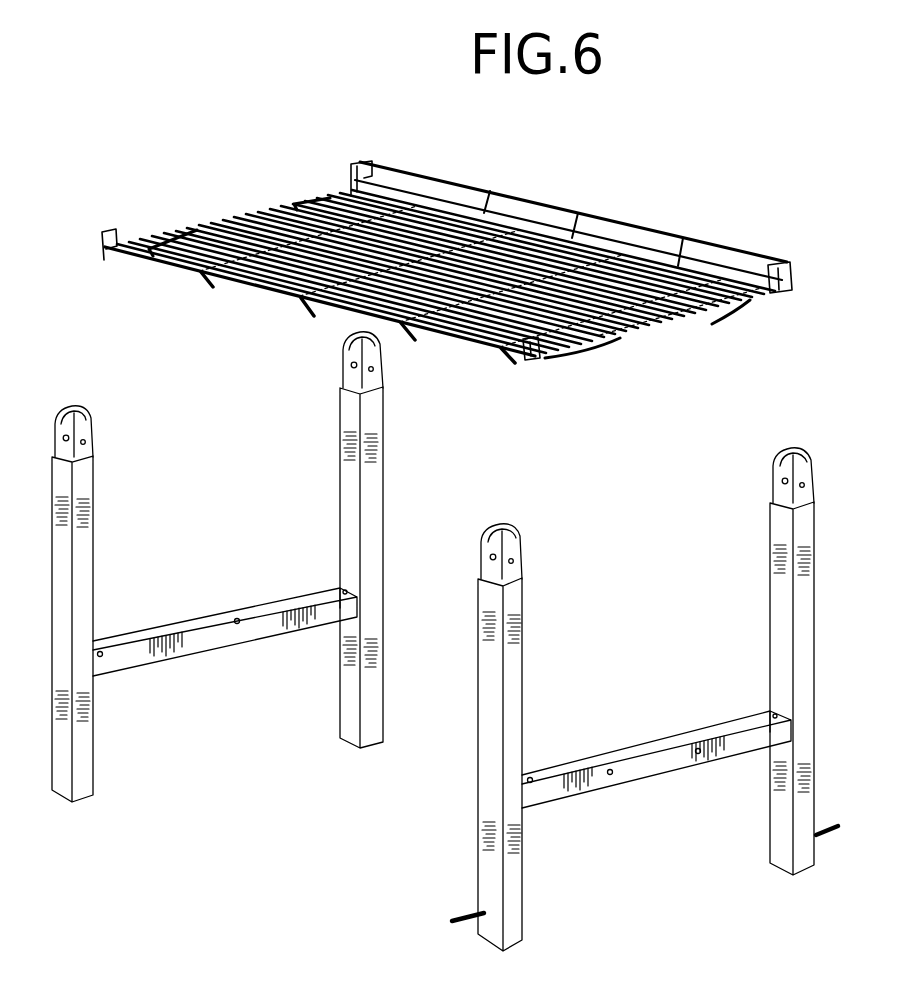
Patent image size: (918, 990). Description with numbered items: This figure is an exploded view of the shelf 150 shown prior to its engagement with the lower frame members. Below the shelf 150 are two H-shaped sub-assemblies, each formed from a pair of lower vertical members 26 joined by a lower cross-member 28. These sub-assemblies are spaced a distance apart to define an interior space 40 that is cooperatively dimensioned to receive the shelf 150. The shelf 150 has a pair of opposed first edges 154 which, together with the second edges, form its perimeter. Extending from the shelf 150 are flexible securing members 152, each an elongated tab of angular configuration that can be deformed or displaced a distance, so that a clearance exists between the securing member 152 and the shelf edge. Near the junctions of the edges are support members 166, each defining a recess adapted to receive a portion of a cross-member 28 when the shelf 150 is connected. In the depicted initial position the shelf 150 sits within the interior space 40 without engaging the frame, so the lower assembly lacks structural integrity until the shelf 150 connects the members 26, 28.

The shelf 150 is at (465, 274).
The securing member 152 is at (167, 240).
The first edges 154 is at (232, 232).
The support member 166 is at (112, 228).
The lower vertical members 26 is at (376, 478).
The lower cross-members 28 is at (200, 649).
The interior space 40 is at (445, 641).